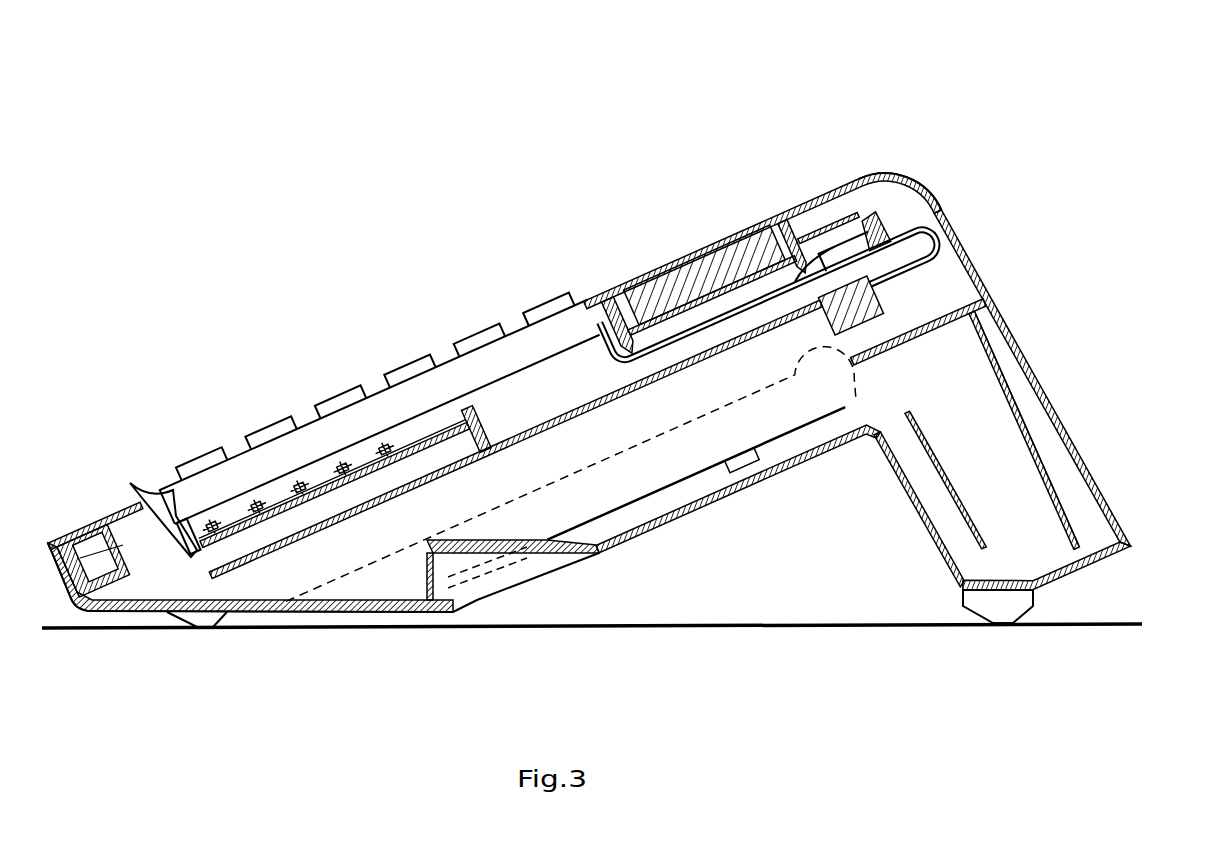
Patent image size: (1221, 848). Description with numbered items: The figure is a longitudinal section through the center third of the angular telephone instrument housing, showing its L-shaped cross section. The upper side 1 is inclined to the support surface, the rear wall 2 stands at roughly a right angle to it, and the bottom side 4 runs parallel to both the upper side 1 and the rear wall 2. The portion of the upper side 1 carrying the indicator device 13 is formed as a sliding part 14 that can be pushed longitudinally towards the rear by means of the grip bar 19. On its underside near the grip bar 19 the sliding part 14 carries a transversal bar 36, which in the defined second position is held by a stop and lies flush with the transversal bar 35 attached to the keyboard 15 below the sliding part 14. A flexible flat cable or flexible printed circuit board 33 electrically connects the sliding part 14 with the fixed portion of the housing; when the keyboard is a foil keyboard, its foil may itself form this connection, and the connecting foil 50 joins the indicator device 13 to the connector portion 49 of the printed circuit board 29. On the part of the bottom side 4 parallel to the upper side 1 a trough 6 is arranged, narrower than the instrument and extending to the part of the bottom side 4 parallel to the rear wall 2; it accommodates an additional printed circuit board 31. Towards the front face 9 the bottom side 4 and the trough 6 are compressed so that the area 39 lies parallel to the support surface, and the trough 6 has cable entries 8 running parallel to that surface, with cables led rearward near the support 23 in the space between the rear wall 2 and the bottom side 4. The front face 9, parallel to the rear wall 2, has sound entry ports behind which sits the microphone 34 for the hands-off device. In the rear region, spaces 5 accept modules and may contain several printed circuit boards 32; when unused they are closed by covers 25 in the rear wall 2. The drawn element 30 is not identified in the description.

The upper side 1 is at (590, 300).
The rear wall 2 is at (1012, 327).
The bottom side 4 is at (903, 497).
The spaces 5 is at (1017, 377).
The trough 6 is at (693, 507).
The cable entries 8 is at (432, 570).
The front face 9 is at (73, 611).
The indicator device 13 is at (717, 300).
The sliding part 14 is at (487, 360).
The keyboard 15 is at (320, 480).
The grip bar 19 is at (137, 490).
The support 23 is at (1060, 590).
The covers 25 is at (1070, 435).
The printed circuit board 29 is at (828, 226).
The inner support wall 30 is at (378, 483).
The additional printed circuit board 31 is at (640, 503).
The printed circuit boards 32 is at (1097, 477).
The flexible printed circuit board 33 is at (947, 210).
The microphone 34 is at (92, 560).
The transversal bar 35 is at (450, 440).
The transversal bar 36 is at (175, 520).
The area 39 is at (258, 612).
The connector portion 49 is at (877, 228).
The connecting foil 50 is at (848, 232).